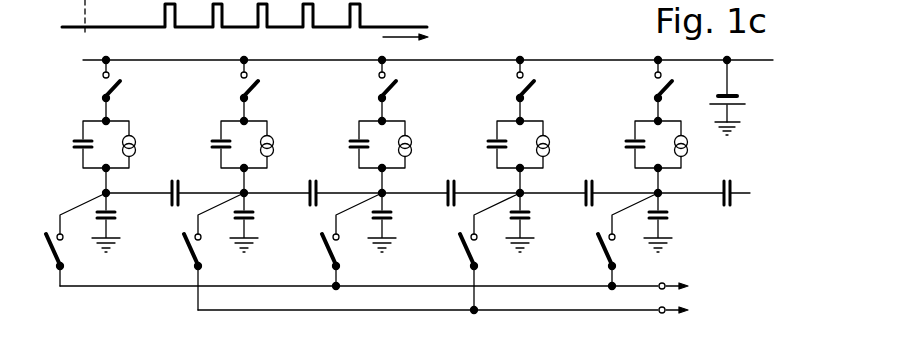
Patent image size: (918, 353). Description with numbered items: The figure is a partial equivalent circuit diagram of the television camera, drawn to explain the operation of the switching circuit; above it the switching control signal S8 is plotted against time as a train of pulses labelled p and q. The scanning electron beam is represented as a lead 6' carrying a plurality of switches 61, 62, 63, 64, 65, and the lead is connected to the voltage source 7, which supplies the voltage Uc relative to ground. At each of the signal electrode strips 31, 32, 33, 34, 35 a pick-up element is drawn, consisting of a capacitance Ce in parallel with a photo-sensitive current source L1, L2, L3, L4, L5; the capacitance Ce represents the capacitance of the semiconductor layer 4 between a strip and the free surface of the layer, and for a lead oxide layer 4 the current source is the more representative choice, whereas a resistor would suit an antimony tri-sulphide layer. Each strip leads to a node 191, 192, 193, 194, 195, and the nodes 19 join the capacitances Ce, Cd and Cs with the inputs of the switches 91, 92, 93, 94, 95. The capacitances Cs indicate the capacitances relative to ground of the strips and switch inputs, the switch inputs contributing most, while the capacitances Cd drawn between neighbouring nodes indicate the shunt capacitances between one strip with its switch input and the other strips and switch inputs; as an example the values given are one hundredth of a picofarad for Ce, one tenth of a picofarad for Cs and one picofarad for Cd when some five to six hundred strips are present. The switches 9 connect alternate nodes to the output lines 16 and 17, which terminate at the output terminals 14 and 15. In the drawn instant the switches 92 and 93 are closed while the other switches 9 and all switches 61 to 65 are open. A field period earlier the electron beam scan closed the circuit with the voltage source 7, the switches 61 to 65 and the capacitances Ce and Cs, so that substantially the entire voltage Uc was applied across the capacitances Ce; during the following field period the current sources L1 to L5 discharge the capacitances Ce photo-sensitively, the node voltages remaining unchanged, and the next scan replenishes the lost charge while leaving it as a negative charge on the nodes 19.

The switching control signal S8 is at (266, 24).
The lead 6' is at (428, 43).
The voltage Uc is at (728, 94).
The voltage source 7 is at (741, 124).
The semiconductor layer 4 is at (112, 152).
The pick-up element capacitance Ce is at (73, 145).
The shunt capacitance Cd is at (175, 180).
The strip capacitance to ground Cs is at (115, 215).
The switch 61 is at (114, 90).
The switch 62 is at (252, 90).
The switch 63 is at (390, 90).
The switch 64 is at (528, 90).
The switch 65 is at (662, 90).
The photo-sensitive current source L1 is at (141, 137).
The photo-sensitive current source L2 is at (279, 137).
The photo-sensitive current source L3 is at (417, 137).
The photo-sensitive current source L4 is at (555, 137).
The photo-sensitive current source L5 is at (690, 132).
The signal electrode strip 31 is at (105, 181).
The signal electrode strip 32 is at (243, 181).
The signal electrode strip 33 is at (381, 181).
The signal electrode strip 34 is at (519, 181).
The signal electrode strip 35 is at (657, 181).
The node 191 is at (107, 192).
The node 192 is at (245, 192).
The node 193 is at (383, 192).
The node 194 is at (521, 192).
The node 195 is at (659, 192).
The nodes 19 is at (185, 228).
The switches 9 is at (149, 270).
The switch 91 is at (54, 251).
The switch 92 is at (192, 251).
The switch 93 is at (330, 251).
The switch 94 is at (468, 251).
The switch 95 is at (606, 251).
The output line 16 is at (403, 286).
The output line 17 is at (398, 310).
The output terminal 14 is at (685, 286).
The output terminal 15 is at (685, 310).